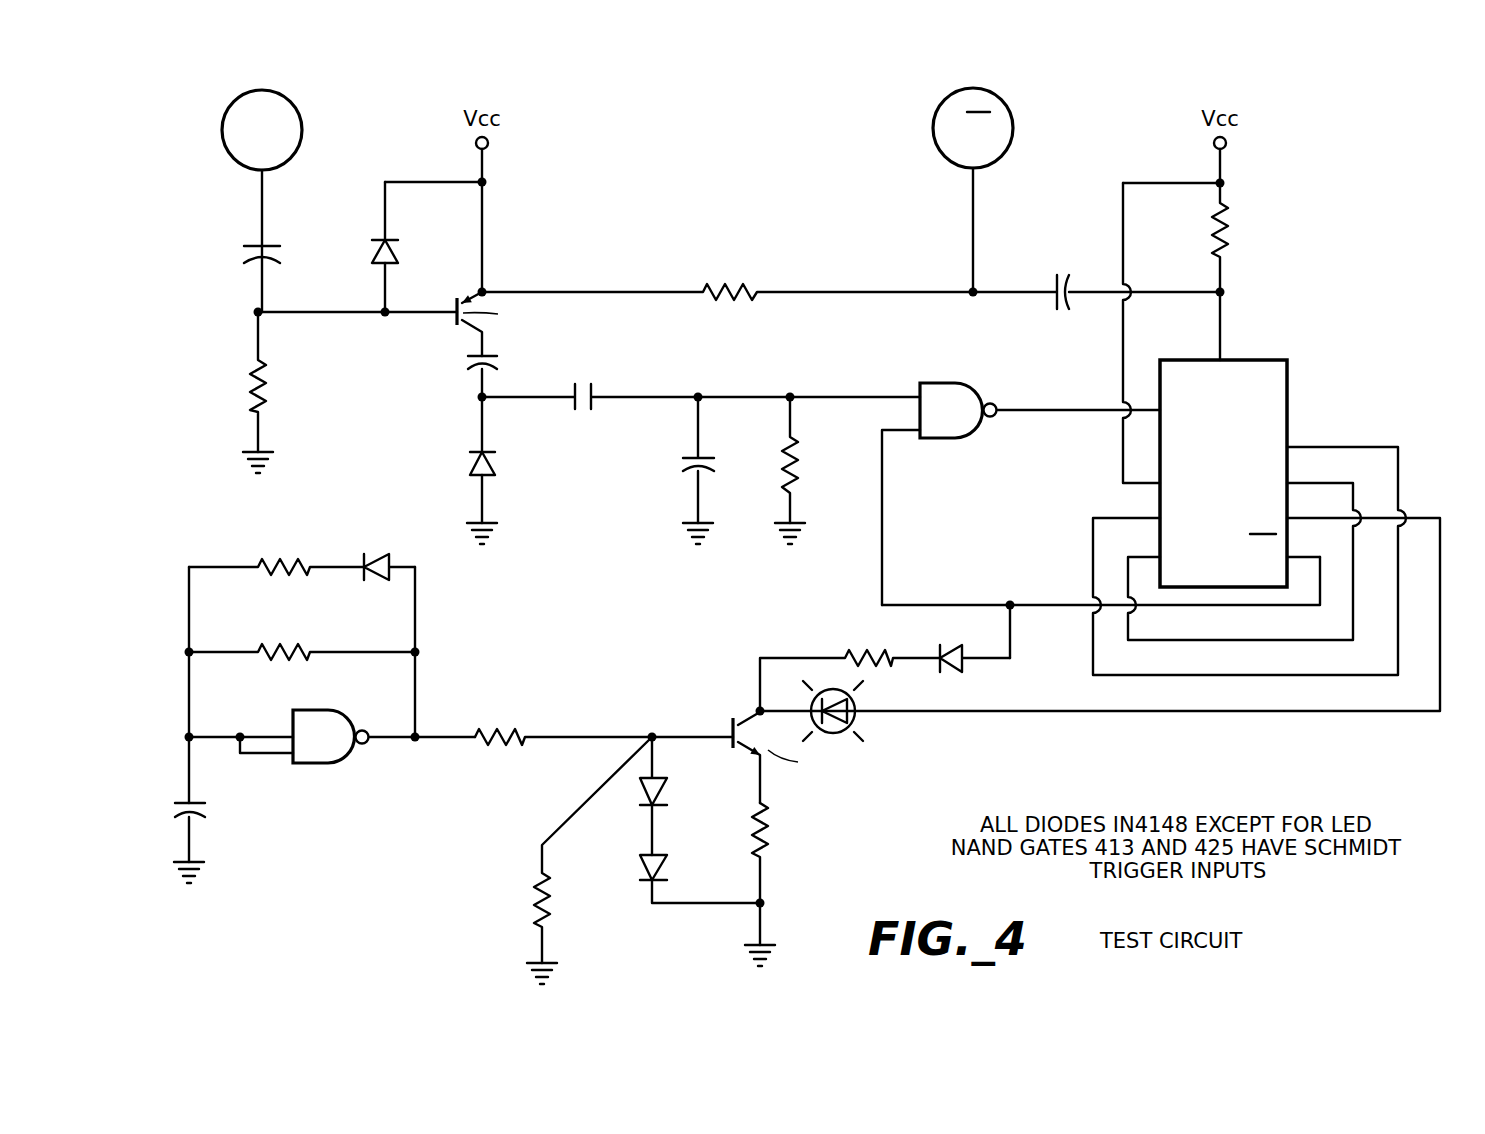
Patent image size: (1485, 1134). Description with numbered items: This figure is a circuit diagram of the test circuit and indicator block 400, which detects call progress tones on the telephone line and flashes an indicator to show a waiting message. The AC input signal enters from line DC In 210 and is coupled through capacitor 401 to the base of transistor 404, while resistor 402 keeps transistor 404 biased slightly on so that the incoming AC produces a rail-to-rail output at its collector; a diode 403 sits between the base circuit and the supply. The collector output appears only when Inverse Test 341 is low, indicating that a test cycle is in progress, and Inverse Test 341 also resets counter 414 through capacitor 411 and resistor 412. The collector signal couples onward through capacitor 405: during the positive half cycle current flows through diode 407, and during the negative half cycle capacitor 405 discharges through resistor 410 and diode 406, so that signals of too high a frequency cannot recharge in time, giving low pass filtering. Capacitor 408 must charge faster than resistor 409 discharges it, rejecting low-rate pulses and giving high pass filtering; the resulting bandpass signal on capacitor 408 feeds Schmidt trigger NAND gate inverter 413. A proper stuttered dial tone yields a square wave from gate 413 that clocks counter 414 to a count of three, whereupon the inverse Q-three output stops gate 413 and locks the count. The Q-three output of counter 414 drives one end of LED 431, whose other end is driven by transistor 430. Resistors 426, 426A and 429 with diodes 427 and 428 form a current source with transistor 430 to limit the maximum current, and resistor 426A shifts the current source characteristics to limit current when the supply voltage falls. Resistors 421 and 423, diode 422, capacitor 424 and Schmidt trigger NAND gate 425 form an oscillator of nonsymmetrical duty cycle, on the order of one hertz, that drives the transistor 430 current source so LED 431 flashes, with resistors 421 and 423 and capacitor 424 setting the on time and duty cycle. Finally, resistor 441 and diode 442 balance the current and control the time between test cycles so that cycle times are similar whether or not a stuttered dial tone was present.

The DC In line 210 is at (299, 117).
The Inverse Test signal 341 is at (1011, 108).
The test circuit and indicator block 400 is at (866, 114).
The capacitor 401 is at (264, 253).
The resistor 402 is at (272, 392).
The diode 403 is at (378, 251).
The transistor 404 is at (455, 303).
The capacitor 405 is at (492, 362).
The diode 406 is at (490, 455).
The diode 407 is at (595, 404).
The capacitor 408 is at (704, 456).
The resistor 409 is at (784, 466).
The resistor 410 is at (735, 302).
The capacitor 411 is at (1053, 300).
The resistor 412 is at (1213, 232).
The Schmidt trigger NAND gate inverter 413 is at (938, 385).
The counter 414 is at (1243, 360).
The resistor 421 is at (280, 578).
The diode 422 is at (368, 570).
The resistor 423 is at (284, 662).
The capacitor 424 is at (195, 808).
The Schmidt trigger NAND gate 425 is at (323, 766).
The resistor 426 is at (500, 750).
The resistor 426A is at (552, 906).
The diode 427 is at (646, 808).
The diode 428 is at (645, 884).
The resistor 429 is at (770, 832).
The transistor 430 is at (730, 724).
The LED 431 is at (856, 729).
The 1K resistor 441 is at (878, 672).
The diode 442 is at (936, 652).